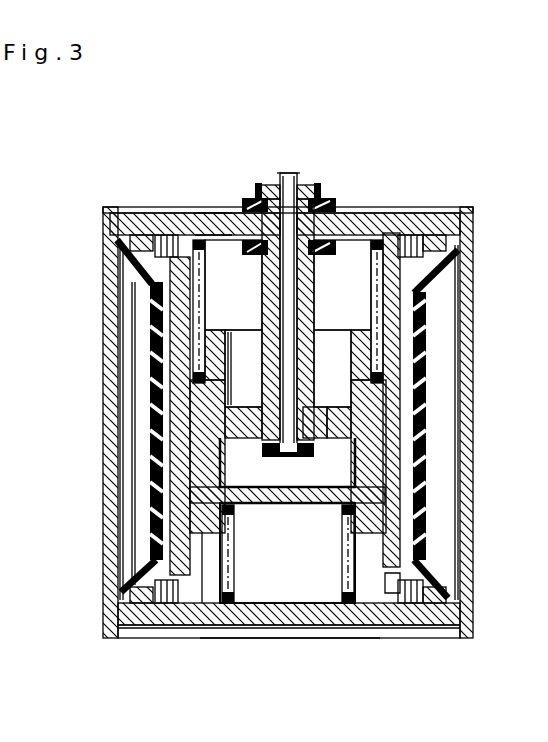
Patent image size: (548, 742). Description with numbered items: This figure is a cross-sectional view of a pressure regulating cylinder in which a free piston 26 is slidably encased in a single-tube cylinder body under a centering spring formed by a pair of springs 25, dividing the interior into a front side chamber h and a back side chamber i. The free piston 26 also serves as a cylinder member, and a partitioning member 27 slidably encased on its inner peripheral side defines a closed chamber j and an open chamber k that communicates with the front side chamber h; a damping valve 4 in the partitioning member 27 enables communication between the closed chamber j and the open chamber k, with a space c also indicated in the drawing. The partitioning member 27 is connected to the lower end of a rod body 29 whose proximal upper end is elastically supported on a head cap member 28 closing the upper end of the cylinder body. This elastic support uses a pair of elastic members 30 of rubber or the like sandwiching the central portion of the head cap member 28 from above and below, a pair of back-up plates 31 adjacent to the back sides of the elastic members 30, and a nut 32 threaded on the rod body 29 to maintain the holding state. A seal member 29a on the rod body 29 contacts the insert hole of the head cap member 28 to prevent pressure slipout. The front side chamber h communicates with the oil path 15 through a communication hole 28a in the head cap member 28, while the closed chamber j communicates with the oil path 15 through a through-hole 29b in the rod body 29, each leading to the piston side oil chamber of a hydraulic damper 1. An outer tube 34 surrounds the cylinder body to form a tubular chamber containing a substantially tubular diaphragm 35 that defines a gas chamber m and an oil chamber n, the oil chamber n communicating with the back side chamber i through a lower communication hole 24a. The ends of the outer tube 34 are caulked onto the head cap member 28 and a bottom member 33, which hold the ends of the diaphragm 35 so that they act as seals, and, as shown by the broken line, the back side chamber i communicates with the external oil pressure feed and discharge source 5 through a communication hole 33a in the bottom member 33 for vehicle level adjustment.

The hydraulic damper 1 is at (288, 173).
The damping valve 4 is at (337, 407).
The external oil pressure feed and discharge source 5 is at (287, 628).
The oil path 15 is at (289, 133).
The lower communication hole 24a is at (202, 625).
The spring 25 is at (376, 238).
The free piston 26 is at (327, 508).
The partitioning member 27 is at (243, 432).
The head cap member 28 is at (440, 218).
The communication hole 28a is at (207, 215).
The rod body 29 is at (306, 322).
The seal member 29a is at (352, 244).
The through-hole 29b is at (288, 457).
The elastic member 30 is at (336, 196).
The back-up plate 31 is at (258, 198).
The nut 32 is at (262, 186).
The bottom member 33 is at (418, 628).
The communication hole 33a is at (268, 630).
The outer tube 34 is at (103, 372).
The diaphragm 35 is at (122, 447).
The space c is at (327, 422).
The front side chamber h is at (227, 326).
The back side chamber i is at (262, 569).
The closed chamber j is at (268, 490).
The open chamber k is at (250, 372).
The gas chamber m is at (150, 532).
The oil chamber n is at (156, 638).